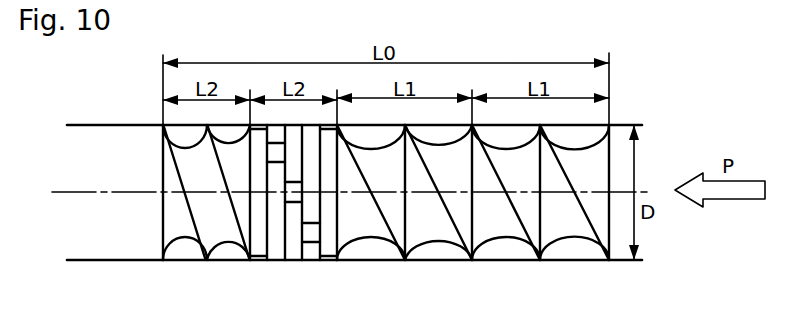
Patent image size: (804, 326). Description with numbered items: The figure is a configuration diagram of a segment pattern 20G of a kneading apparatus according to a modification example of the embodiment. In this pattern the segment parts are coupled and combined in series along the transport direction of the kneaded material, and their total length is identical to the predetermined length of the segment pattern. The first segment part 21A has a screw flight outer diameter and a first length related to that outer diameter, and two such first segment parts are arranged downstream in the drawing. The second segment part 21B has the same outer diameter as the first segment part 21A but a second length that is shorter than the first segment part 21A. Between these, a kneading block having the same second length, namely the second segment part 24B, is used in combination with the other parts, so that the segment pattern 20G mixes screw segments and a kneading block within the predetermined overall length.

The segment pattern 20G is at (657, 116).
The second segment part 21B is at (185, 242).
The second segment part (kneading block) 24B is at (313, 257).
The first segment part 21A is at (435, 238).